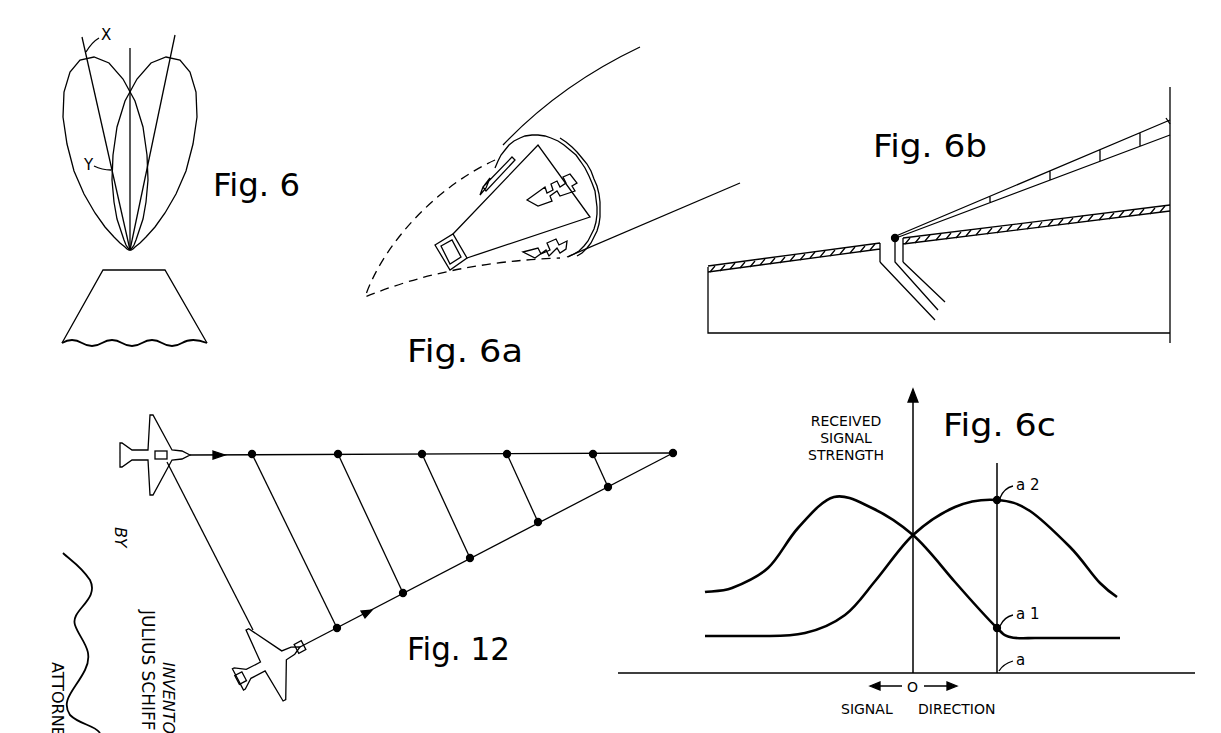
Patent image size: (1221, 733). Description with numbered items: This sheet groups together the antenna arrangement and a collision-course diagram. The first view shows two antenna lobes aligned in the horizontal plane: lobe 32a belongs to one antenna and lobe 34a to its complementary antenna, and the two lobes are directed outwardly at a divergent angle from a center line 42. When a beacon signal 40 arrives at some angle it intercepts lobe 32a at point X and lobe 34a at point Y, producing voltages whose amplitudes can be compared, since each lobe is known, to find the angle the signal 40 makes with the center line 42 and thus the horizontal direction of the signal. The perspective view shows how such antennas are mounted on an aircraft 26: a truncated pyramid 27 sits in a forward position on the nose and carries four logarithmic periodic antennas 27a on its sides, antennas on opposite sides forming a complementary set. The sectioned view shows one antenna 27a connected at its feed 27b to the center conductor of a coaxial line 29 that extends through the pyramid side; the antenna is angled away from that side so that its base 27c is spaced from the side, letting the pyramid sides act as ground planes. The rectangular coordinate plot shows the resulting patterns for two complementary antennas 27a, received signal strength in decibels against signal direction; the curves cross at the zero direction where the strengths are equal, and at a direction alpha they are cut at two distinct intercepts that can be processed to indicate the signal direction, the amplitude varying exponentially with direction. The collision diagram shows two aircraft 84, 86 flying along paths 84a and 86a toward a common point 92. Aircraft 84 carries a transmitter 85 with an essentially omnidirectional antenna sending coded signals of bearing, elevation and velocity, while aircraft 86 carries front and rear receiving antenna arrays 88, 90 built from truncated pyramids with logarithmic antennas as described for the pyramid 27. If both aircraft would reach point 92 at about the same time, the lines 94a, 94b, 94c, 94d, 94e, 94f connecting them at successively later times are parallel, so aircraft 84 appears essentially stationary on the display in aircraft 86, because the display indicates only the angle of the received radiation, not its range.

In FIG. 6, the aircraft 26 is at (177, 283).
In FIG. 6A, the aircraft 26 is at (603, 73).
In FIG. 6A, the truncated pyramid 27 is at (470, 267).
In FIG. 6B, the truncated pyramid 27 is at (818, 258).
In FIG. 6A, the logarithmic periodic antennas 27a is at (480, 193).
In FIG. 6B, the logarithmic periodic antennas 27a is at (1102, 163).
In FIG. 6B, the antenna feed point 27b is at (893, 236).
In FIG. 6B, the antenna base 27c is at (1169, 120).
In FIG. 6B, the coaxial line 29 is at (913, 302).
In FIG. 6, the lobe 32a is at (97, 223).
In FIG. 6, the lobe 34a is at (191, 72).
In FIG. 6, the signal 40 is at (97, 103).
In FIG. 6, the center line 42 is at (132, 56).
In FIG. 12, the aircraft 84 is at (143, 463).
In FIG. 12, the path 84a is at (357, 453).
In FIG. 12, the transmitter 85 is at (167, 450).
In FIG. 12, the aircraft 86 is at (253, 667).
In FIG. 12, the path 86a is at (581, 505).
In FIG. 12, the receiving antenna array 88 is at (235, 684).
In FIG. 12, the receiving antenna array 90 is at (305, 645).
In FIG. 12, the point 92 is at (678, 453).
In FIG. 12, the line 94a is at (213, 553).
In FIG. 12, the line 94b is at (292, 540).
In FIG. 12, the line 94c is at (370, 527).
In FIG. 12, the line 94d is at (447, 510).
In FIG. 12, the line 94e is at (518, 495).
In FIG. 12, the line 94f is at (600, 477).